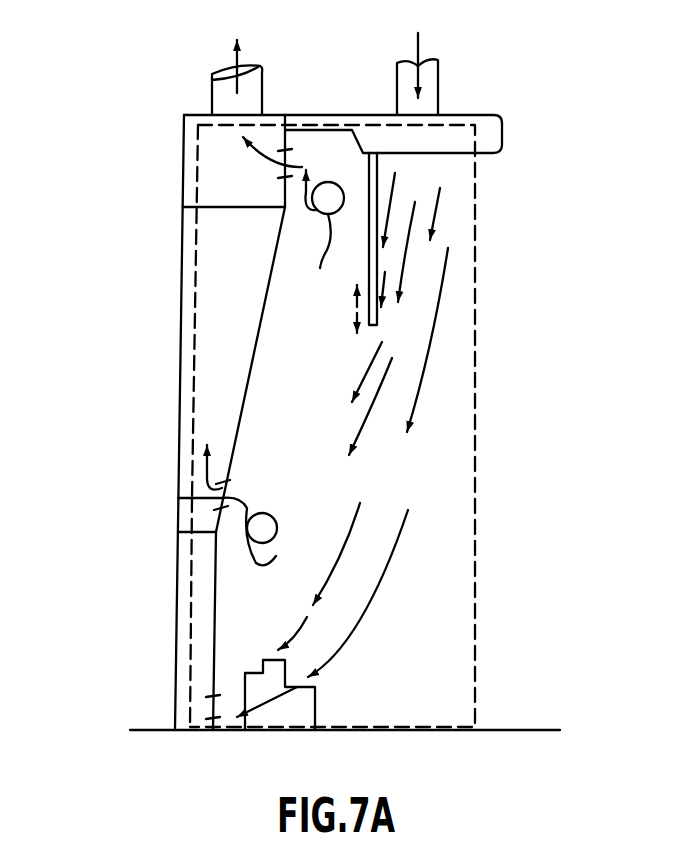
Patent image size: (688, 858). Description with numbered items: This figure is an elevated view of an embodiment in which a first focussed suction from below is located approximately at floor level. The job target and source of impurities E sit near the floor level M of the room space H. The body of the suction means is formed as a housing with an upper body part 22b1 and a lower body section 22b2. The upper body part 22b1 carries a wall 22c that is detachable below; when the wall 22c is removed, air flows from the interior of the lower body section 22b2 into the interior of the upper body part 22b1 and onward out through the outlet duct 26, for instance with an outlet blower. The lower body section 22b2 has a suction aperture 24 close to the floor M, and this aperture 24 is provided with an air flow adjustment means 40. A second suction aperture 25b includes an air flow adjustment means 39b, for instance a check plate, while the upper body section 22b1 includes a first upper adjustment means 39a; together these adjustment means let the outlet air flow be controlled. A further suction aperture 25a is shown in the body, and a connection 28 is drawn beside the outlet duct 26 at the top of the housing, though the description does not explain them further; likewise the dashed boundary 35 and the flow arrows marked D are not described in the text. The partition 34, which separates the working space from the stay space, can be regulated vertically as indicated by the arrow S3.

The upper body part 22b1 is at (176, 363).
The lower body section 22b2 is at (168, 594).
The wall 22c is at (200, 534).
The suction aperture 24 is at (235, 690).
The lower duct passage 25a is at (180, 500).
The second suction aperture 25b is at (290, 175).
The outlet duct 26 is at (213, 91).
The inlet pipe 28 is at (433, 78).
The partition 34 is at (378, 322).
The housing wall 35 is at (465, 600).
The first upper adjustment means 39a is at (227, 481).
The air flow adjustment means 39b is at (288, 150).
The air flow adjustment means 40 is at (213, 698).
The air flow direction D is at (324, 232).
The source of impurities E is at (276, 673).
The room space H is at (632, 425).
The floor level M is at (530, 732).
The arrow S3 is at (357, 307).